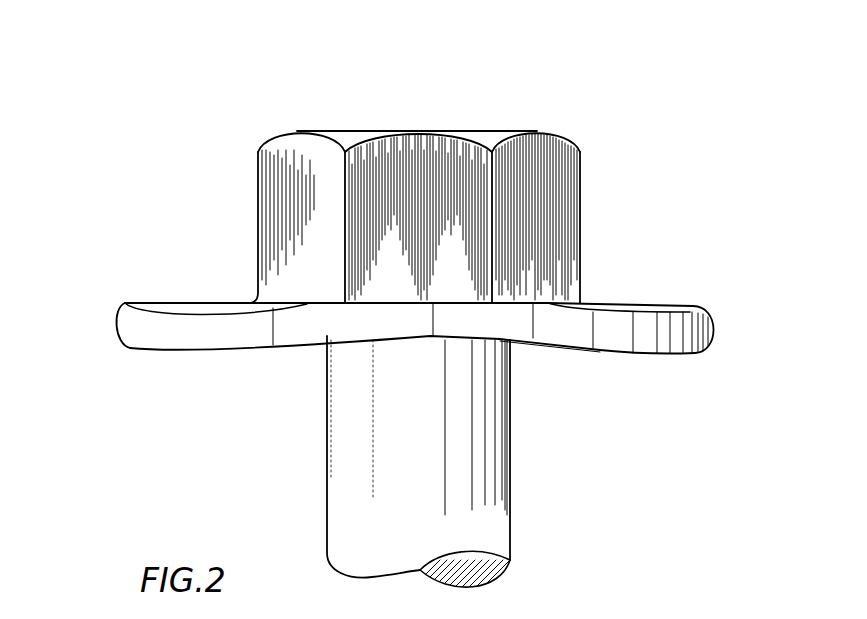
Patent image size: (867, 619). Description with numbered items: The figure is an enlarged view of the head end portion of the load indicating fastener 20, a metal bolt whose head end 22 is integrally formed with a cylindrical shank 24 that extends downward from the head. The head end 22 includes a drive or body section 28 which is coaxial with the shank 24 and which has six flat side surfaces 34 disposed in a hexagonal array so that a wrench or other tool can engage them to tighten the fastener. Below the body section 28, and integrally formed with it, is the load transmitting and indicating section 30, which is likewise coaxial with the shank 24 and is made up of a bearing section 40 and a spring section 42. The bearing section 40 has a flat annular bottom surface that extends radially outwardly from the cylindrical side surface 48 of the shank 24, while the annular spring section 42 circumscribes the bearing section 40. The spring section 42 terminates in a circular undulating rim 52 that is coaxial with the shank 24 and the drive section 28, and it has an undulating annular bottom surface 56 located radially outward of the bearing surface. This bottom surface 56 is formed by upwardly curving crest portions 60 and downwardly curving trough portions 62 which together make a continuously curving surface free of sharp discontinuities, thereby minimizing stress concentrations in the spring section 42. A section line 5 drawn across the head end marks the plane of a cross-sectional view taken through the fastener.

The section line 5 is at (84, 104).
The load indicating fastener 20 is at (647, 125).
The head end 22 is at (378, 182).
The cylindrical shank 24 is at (389, 461).
The drive or body section 28 is at (445, 182).
The load transmitting and indicating section 30 is at (410, 336).
The flat side surfaces 34 is at (378, 156).
The bearing section 40 is at (453, 336).
The spring section 42 is at (453, 344).
The cylindrical side surface 48 is at (511, 500).
The circular undulating rim 52 is at (453, 375).
The undulating annular bottom surface 56 is at (441, 375).
The crest portions 60 is at (424, 335).
The trough portions 62 is at (163, 350).